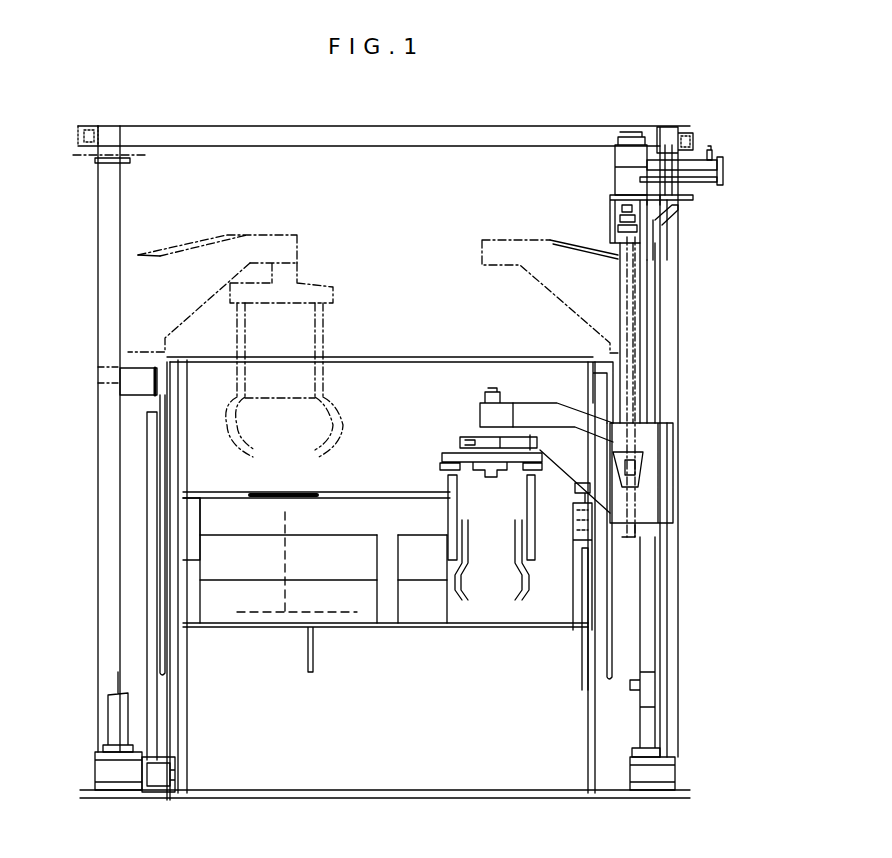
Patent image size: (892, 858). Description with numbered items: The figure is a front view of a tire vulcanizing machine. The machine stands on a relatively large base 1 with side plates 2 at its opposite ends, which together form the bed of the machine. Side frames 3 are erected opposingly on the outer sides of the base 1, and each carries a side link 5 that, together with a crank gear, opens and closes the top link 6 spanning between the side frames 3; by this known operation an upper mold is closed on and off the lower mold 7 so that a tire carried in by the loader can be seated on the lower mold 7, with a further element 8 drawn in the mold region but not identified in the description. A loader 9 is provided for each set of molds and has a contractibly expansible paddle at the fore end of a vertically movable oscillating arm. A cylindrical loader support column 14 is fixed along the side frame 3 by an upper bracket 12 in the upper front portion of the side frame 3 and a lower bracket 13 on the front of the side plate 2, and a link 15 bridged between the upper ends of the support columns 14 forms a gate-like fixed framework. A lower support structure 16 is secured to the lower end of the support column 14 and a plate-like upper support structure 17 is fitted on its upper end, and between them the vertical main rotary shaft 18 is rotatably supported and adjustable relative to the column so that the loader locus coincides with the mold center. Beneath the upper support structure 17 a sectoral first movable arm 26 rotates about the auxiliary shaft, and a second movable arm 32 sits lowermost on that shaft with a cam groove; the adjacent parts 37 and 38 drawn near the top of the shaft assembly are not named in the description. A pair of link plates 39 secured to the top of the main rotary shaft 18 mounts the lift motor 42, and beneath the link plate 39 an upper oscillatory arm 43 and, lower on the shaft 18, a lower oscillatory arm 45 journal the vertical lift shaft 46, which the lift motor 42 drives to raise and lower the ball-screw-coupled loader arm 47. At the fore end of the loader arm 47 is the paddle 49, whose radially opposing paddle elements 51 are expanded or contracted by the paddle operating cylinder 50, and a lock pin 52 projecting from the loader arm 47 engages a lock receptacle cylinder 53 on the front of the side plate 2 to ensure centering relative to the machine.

The base 1 is at (445, 798).
The side plates 2 is at (187, 708).
The side frames 3 is at (160, 655).
The side link 5 is at (147, 600).
The top link 6 is at (428, 360).
The lower mold 7 is at (360, 628).
The shelf 8 is at (333, 535).
The loader 9 is at (300, 235).
The upper bracket 12 is at (130, 397).
The lower bracket 13 is at (150, 795).
The loader support column 14 is at (98, 562).
The link 15 is at (420, 147).
The lower support structure 16 is at (95, 775).
The upper support structure 17 is at (709, 150).
The main rotary shaft 18 is at (108, 712).
The first movable arm 26 is at (680, 200).
The second movable arm 32 is at (672, 215).
The end cap 37 is at (722, 157).
The shaft 38 is at (700, 185).
The link plates 39 is at (660, 240).
The lift motor 42 is at (615, 182).
The upper oscillatory arm 43 is at (612, 240).
The lower oscillatory arm 45 is at (657, 697).
The vertical lift shaft 46 is at (622, 310).
The loader arm 47 is at (255, 235).
The paddle 49 is at (325, 357).
The paddle operating cylinder 50 is at (540, 445).
The paddle elements 51 is at (450, 500).
The lock pin 52 is at (573, 508).
The lock receptacle cylinder 53 is at (195, 517).